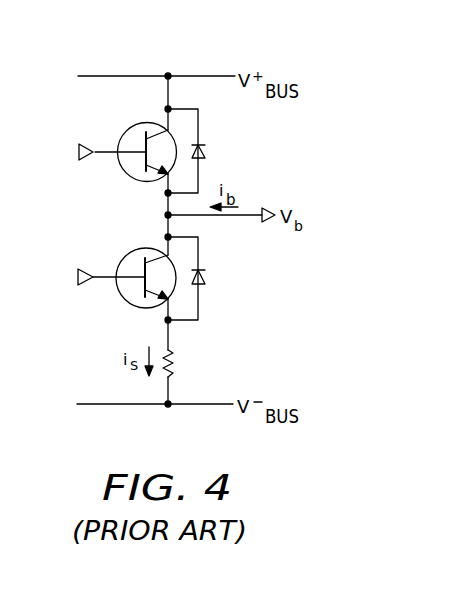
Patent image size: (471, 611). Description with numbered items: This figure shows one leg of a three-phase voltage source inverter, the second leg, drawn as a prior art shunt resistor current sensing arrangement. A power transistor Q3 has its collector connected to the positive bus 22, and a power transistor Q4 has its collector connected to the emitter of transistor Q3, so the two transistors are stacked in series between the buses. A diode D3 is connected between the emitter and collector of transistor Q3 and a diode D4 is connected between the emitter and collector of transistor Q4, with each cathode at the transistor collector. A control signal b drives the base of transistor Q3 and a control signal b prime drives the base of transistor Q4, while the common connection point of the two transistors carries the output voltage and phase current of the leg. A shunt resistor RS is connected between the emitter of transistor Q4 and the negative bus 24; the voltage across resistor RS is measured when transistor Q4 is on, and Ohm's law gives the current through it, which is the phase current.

The bus 22 is at (128, 75).
The bus 24 is at (122, 404).
The power transistor Q3 is at (121, 141).
The power transistor Q4 is at (118, 267).
The diode D3 is at (201, 151).
The diode D4 is at (201, 278).
The shunt resistor RS is at (179, 366).